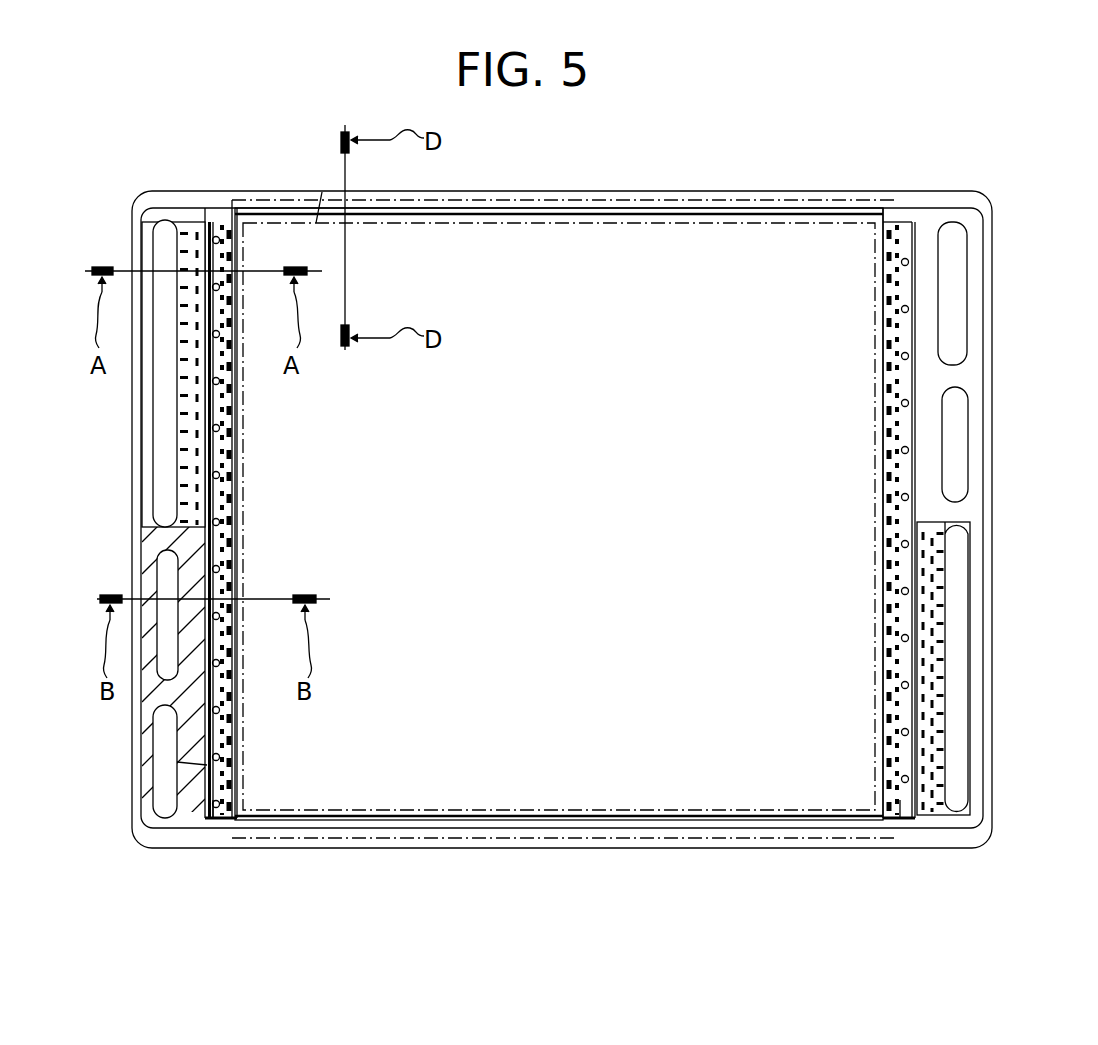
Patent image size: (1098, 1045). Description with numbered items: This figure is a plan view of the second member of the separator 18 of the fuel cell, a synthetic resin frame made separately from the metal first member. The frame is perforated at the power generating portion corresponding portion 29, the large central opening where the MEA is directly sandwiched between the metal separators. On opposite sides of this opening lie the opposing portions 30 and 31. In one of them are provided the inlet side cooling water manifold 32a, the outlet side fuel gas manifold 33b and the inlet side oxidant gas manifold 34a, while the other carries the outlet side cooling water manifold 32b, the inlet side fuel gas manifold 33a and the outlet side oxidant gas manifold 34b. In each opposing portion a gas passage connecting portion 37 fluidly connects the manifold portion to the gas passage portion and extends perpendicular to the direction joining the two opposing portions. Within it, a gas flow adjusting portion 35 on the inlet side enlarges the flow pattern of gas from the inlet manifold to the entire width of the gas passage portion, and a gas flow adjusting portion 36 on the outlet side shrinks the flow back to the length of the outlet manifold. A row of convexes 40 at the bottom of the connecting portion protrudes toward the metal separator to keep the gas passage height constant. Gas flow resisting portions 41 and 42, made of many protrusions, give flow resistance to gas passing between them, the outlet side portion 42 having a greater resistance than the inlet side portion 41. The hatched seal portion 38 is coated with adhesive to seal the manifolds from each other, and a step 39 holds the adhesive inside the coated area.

The separator 18 is at (628, 190).
The power generating portion corresponding portion 29 is at (718, 768).
The opposing portion 30 is at (222, 222).
The opposing portion 31 is at (905, 215).
The inlet side cooling water manifold 32a is at (165, 583).
The outlet side cooling water manifold 32b is at (955, 272).
The inlet side fuel gas manifold 33a is at (958, 444).
The outlet side fuel gas manifold 33b is at (163, 777).
The inlet side oxidant gas manifold 34a is at (150, 428).
The outlet side oxidant gas manifold 34b is at (958, 634).
The gas flow adjusting portion 35 is at (220, 815).
The gas flow adjusting portion 36 is at (900, 812).
The gas passage connecting portion 37 is at (208, 818).
The seal portion 38 is at (158, 530).
The step 39 is at (148, 735).
The convexes 40 is at (218, 228).
The gas flow resisting portion 41 is at (193, 227).
The gas flow resisting portion 42 is at (925, 783).